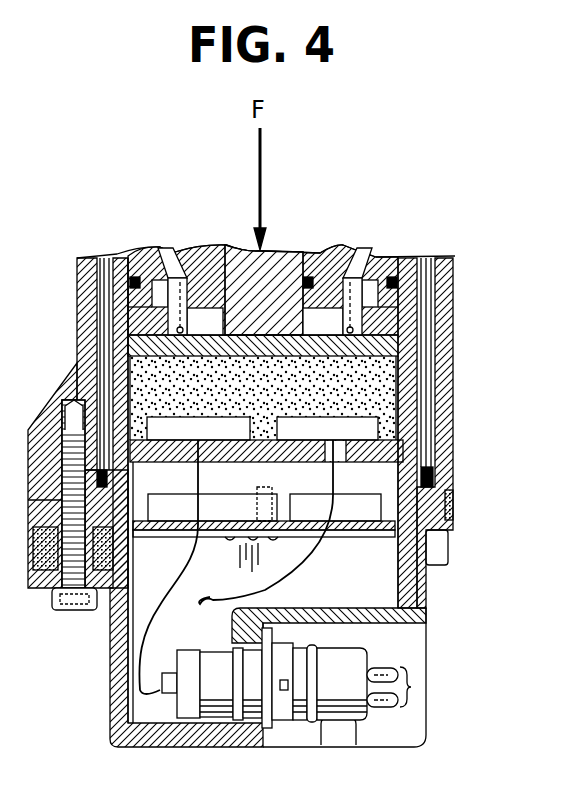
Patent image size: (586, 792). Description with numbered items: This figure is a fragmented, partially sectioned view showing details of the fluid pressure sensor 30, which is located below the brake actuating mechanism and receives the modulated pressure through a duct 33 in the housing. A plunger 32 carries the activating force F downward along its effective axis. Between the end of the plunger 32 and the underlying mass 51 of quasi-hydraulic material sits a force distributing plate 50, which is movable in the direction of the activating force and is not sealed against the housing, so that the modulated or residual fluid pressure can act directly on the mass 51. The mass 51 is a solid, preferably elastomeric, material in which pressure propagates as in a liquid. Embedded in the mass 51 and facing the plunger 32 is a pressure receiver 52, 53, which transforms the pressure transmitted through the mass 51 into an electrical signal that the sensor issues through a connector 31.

The fluid pressure sensor 30 is at (71, 310).
The connector 31 is at (412, 688).
The plunger 32 is at (198, 249).
The duct 33 is at (160, 249).
The force distributing plate 50 is at (380, 337).
The mass of quasi-hydraulic material 51 is at (376, 387).
The pressure receiver 52 is at (365, 426).
The pressure receiver 53 is at (163, 424).